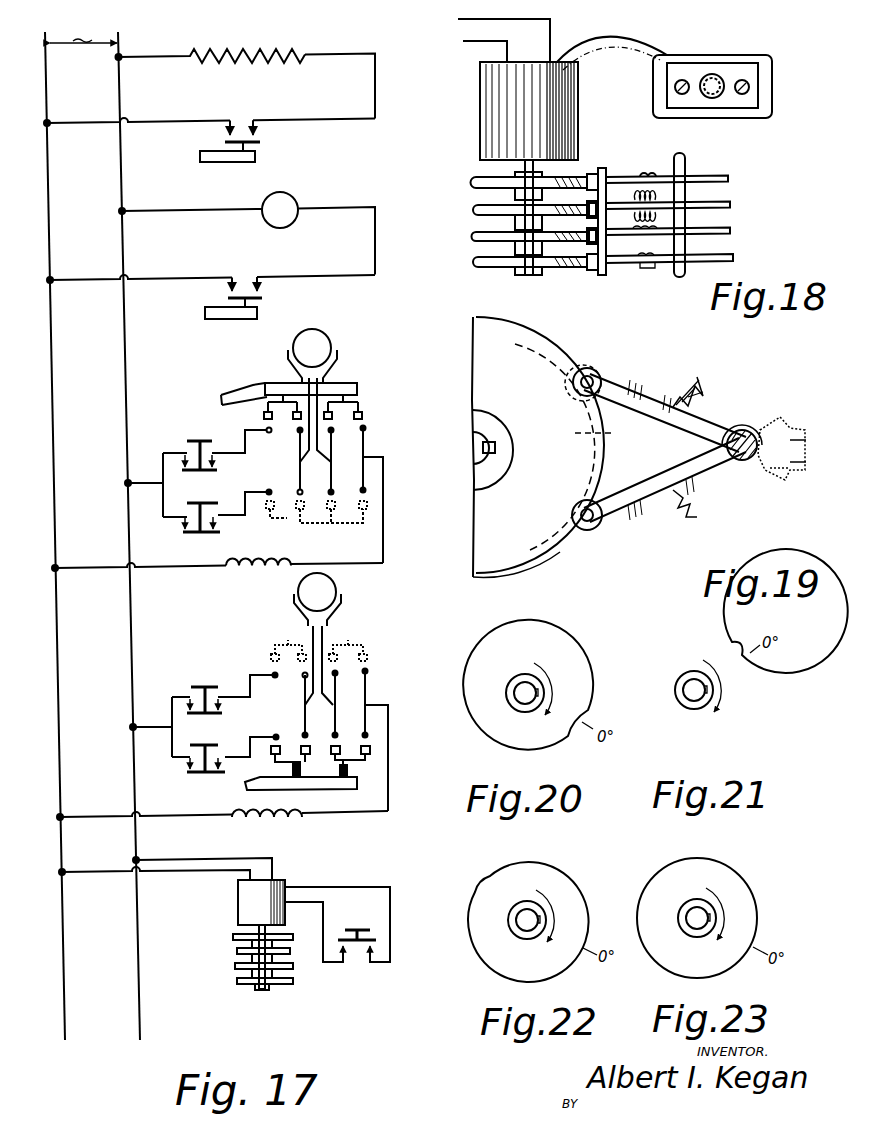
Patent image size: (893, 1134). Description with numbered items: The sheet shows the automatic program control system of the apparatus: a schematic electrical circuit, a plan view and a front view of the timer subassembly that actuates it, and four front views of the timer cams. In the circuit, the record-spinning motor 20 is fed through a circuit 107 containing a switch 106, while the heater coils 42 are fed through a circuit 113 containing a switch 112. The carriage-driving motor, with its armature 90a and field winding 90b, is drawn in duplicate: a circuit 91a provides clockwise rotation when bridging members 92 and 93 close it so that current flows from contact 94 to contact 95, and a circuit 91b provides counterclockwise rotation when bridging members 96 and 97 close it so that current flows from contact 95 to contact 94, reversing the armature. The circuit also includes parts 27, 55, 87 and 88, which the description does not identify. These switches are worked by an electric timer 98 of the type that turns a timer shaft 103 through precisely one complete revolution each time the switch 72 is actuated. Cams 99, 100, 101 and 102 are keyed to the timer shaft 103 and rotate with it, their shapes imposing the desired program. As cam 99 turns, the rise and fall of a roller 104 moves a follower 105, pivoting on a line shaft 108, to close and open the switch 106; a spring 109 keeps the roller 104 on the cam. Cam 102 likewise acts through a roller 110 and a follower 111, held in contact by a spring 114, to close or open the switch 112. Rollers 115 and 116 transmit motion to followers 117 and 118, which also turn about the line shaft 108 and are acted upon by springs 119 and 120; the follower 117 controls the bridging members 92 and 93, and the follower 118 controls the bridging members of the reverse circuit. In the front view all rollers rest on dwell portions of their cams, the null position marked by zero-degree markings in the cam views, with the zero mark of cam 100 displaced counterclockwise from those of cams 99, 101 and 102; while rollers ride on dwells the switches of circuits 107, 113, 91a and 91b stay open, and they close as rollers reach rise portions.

In FIG. 17, the record-spinning motor 20 is at (268, 198).
In FIG. 18, the switch housing 27 is at (768, 112).
In FIG. 17, the heater coils 42 is at (283, 49).
In FIG. 17, the supply lines 55 is at (132, 602).
In FIG. 17, the switch 72 is at (355, 928).
In FIG. 18, the switch 72 is at (720, 78).
In FIG. 17, the relay 87 is at (193, 440).
In FIG. 17, the relay 88 is at (188, 533).
In FIG. 17, the armature 90a is at (315, 348).
In FIG. 17, the field winding 90b is at (258, 566).
In FIG. 17, the motor circuit 91a is at (383, 472).
In FIG. 17, the motor circuit 91b is at (388, 718).
In FIG. 17, the bridging member 92 is at (270, 387).
In FIG. 17, the bridging member 93 is at (360, 407).
In FIG. 17, the contact 94 is at (302, 459).
In FIG. 17, the contact 95 is at (330, 462).
In FIG. 17, the bridging member 96 is at (287, 520).
In FIG. 17, the bridging member 97 is at (307, 523).
In FIG. 17, the electric timer 98 is at (238, 896).
In FIG. 18, the electric timer 98 is at (490, 113).
In FIG. 17, the cam 99 is at (233, 937).
In FIG. 18, the cam 99 is at (472, 183).
In FIG. 19, the cam 99 is at (518, 564).
In FIG. 20, the cam 99 is at (488, 648).
In FIG. 17, the cam 100 is at (237, 951).
In FIG. 18, the cam 100 is at (475, 210).
In FIG. 19, the cam 100 is at (580, 447).
In FIG. 21, the cam 100 is at (747, 710).
In FIG. 17, the cam 101 is at (235, 966).
In FIG. 18, the cam 101 is at (472, 236).
In FIG. 22, the cam 101 is at (502, 958).
In FIG. 17, the cam 102 is at (237, 981).
In FIG. 18, the cam 102 is at (475, 262).
In FIG. 19, the cam 102 is at (540, 357).
In FIG. 23, the cam 102 is at (747, 898).
In FIG. 18, the timer shaft 103 is at (528, 273).
In FIG. 19, the timer shaft 103 is at (480, 457).
In FIG. 18, the roller 104 is at (597, 170).
In FIG. 17, the follower 105 is at (207, 313).
In FIG. 18, the follower 105 is at (708, 180).
In FIG. 19, the follower 105 is at (798, 460).
In FIG. 17, the switch 106 is at (264, 300).
In FIG. 17, the circuit 107 is at (345, 207).
In FIG. 18, the line shaft 108 is at (683, 162).
In FIG. 19, the line shaft 108 is at (742, 430).
In FIG. 18, the spring 109 is at (643, 173).
In FIG. 18, the roller 110 is at (600, 268).
In FIG. 19, the roller 110 is at (587, 530).
In FIG. 17, the follower 111 is at (210, 161).
In FIG. 18, the follower 111 is at (723, 260).
In FIG. 19, the follower 111 is at (667, 477).
In FIG. 17, the switch 112 is at (262, 146).
In FIG. 17, the circuit 113 is at (376, 93).
In FIG. 18, the spring 114 is at (643, 263).
In FIG. 19, the spring 114 is at (678, 510).
In FIG. 18, the roller 115 is at (597, 210).
In FIG. 19, the roller 115 is at (590, 368).
In FIG. 18, the roller 116 is at (587, 232).
In FIG. 17, the follower 117 is at (349, 388).
In FIG. 18, the follower 117 is at (725, 204).
In FIG. 19, the follower 117 is at (642, 387).
In FIG. 17, the follower 118 is at (340, 790).
In FIG. 18, the follower 118 is at (725, 232).
In FIG. 19, the follower 118 is at (770, 473).
In FIG. 18, the spring 119 is at (633, 200).
In FIG. 19, the spring 119 is at (693, 377).
In FIG. 18, the spring 120 is at (647, 257).